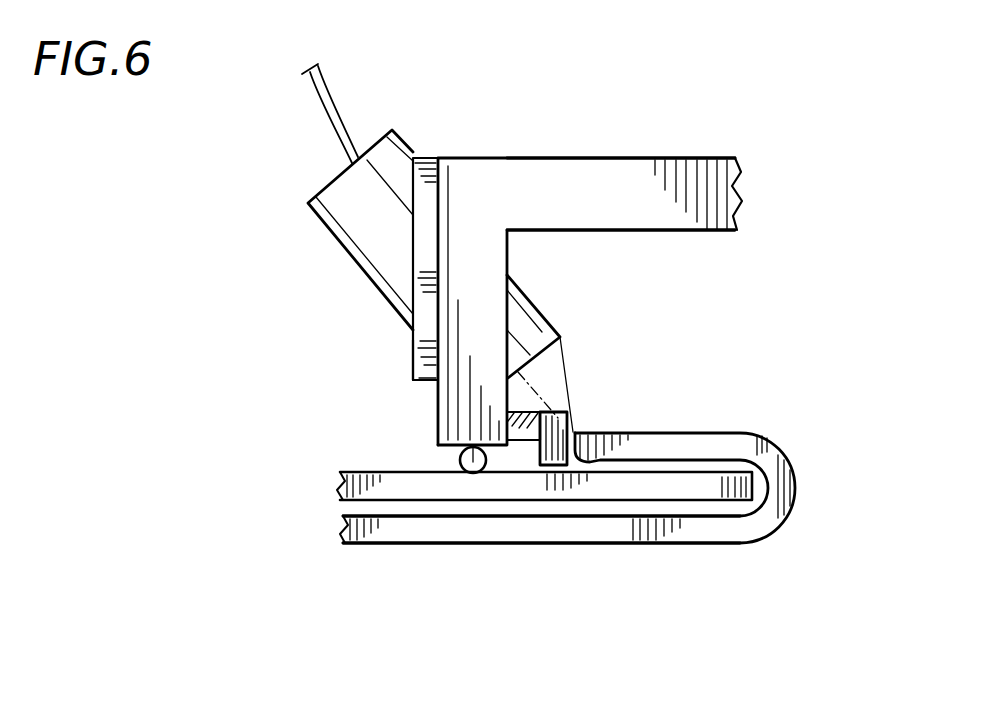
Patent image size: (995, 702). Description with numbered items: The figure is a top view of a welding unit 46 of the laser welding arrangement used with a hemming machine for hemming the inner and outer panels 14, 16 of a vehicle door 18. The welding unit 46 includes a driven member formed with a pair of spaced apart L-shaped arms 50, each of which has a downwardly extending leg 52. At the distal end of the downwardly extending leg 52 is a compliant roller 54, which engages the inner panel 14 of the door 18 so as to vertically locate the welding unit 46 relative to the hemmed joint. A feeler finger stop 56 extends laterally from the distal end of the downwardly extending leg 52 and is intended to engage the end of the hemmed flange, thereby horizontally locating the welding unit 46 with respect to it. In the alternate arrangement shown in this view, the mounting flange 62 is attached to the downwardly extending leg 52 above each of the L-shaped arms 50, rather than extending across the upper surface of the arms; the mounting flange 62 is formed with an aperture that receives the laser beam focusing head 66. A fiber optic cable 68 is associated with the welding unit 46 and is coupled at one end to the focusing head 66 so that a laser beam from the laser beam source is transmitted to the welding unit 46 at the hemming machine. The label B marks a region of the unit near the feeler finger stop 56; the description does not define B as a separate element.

The inner panel 14 is at (353, 472).
The outer panel 16 is at (460, 530).
The vehicle door 18 is at (730, 549).
The welding unit 46 is at (499, 115).
The L-shaped arm 50 is at (597, 160).
The downwardly extending leg 52 is at (438, 263).
The compliant roller 54 is at (474, 473).
The feeler finger stop 56 is at (598, 463).
The mounting flange 62 is at (413, 357).
The laser beam focusing head 66 is at (323, 228).
The fiber optic cable 68 is at (322, 116).
The latch element B is at (565, 372).